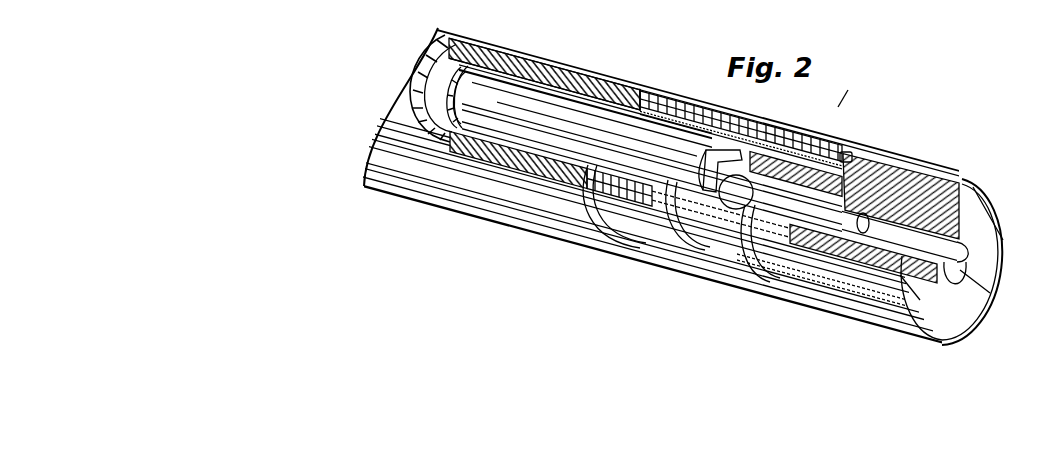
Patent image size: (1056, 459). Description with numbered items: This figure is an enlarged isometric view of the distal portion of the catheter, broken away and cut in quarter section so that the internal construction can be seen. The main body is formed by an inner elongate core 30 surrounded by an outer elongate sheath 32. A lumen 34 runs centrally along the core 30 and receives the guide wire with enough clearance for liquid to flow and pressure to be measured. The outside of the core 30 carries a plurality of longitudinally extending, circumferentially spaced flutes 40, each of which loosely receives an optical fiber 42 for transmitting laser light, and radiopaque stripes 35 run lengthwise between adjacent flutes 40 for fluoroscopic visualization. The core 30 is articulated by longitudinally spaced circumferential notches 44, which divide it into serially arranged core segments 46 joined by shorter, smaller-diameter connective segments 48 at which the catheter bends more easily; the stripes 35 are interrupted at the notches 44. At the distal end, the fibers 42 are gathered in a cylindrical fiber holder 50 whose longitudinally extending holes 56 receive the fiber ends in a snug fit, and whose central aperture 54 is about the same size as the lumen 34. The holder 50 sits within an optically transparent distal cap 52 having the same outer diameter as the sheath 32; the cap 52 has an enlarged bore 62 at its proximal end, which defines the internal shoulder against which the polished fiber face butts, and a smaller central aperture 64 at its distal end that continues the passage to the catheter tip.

The inner elongate core 30 is at (573, 122).
The outer elongate sheath 32 is at (613, 81).
The lumen 34 is at (744, 184).
The radiopaque stripes 35 is at (440, 76).
The flutes 40 is at (642, 92).
The optical fiber 42 is at (457, 140).
The circumferential notches 44 is at (403, 166).
The core segments 46 is at (553, 140).
The connective segments 48 is at (491, 95).
The fiber holder 50 is at (822, 163).
The distal cap 52 is at (935, 168).
The central aperture 54 is at (860, 220).
The longitudinally extending holes 56 is at (847, 157).
The enlarged bore 62 is at (712, 168).
The central aperture 64 is at (963, 262).